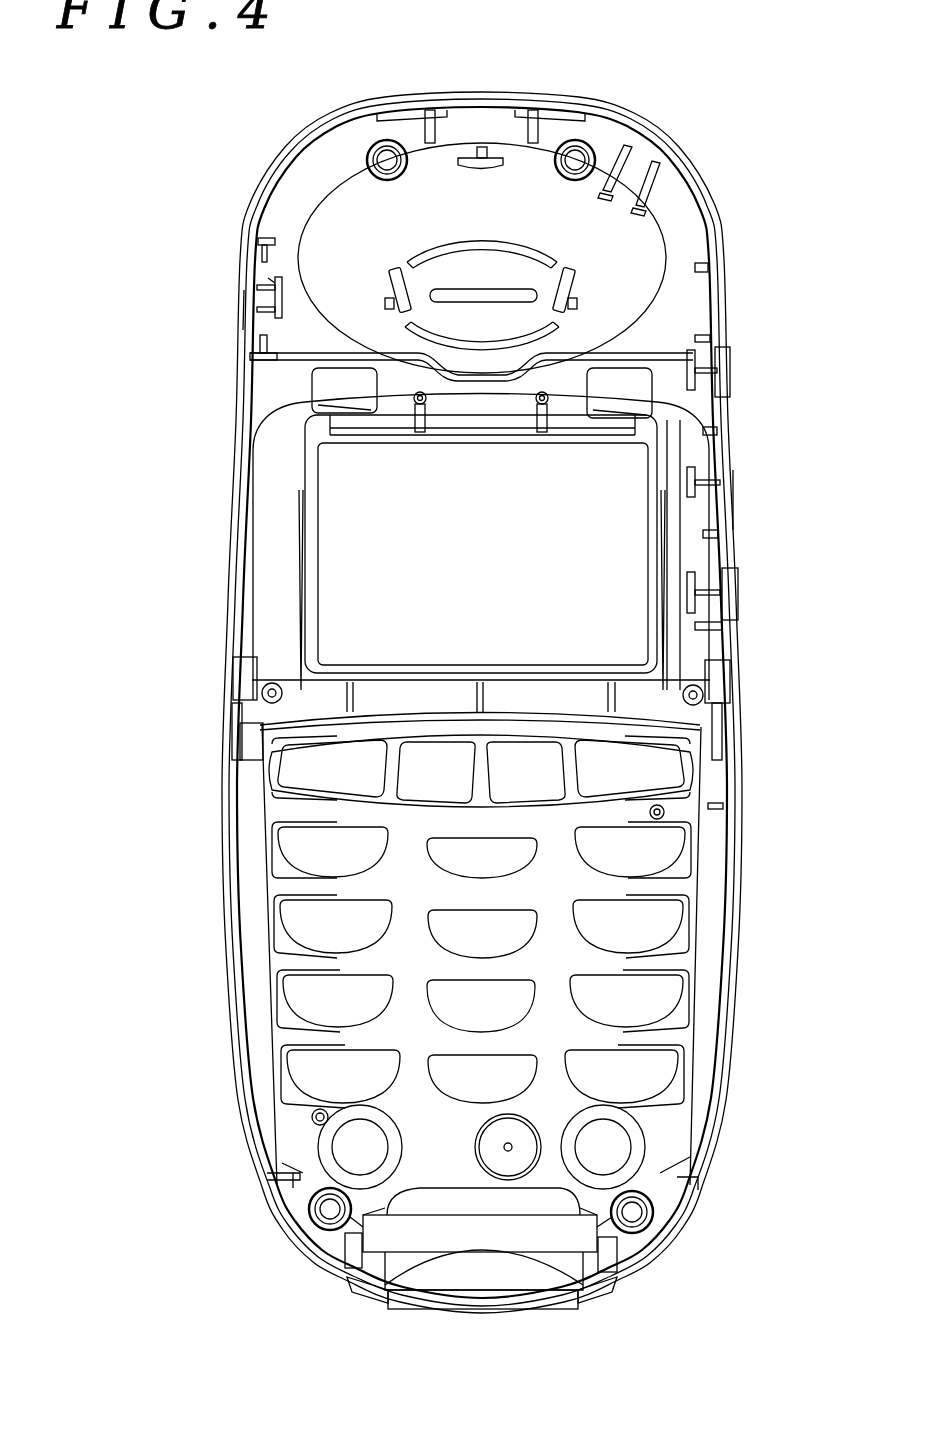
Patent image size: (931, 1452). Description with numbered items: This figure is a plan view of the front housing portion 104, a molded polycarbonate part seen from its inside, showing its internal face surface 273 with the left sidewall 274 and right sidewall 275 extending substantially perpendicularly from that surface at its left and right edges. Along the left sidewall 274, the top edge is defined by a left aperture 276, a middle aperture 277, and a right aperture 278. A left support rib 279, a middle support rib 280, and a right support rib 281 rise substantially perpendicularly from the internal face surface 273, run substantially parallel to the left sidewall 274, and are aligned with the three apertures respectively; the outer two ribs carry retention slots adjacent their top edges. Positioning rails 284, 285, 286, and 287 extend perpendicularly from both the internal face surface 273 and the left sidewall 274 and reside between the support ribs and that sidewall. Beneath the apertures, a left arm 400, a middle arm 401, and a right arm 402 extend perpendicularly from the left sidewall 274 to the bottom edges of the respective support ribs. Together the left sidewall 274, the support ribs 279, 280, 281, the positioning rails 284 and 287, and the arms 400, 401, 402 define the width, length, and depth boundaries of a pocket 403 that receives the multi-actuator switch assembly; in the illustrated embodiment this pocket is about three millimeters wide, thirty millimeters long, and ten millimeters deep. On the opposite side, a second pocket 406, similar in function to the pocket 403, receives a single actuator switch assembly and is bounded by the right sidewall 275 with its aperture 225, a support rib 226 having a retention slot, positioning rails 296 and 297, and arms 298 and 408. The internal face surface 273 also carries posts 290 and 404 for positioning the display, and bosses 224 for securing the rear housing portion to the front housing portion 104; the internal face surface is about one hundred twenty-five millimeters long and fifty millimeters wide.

The front housing portion 104 is at (708, 1217).
The bosses 224 is at (384, 141).
The aperture 225 is at (244, 306).
The support rib 226 is at (284, 292).
The internal face surface 273 is at (567, 1046).
The left sidewall 274 is at (742, 790).
The right sidewall 275 is at (224, 796).
The left aperture 276 is at (730, 581).
The middle aperture 277 is at (734, 498).
The right aperture 278 is at (723, 375).
The left support rib 279 is at (687, 593).
The middle support rib 280 is at (687, 483).
The right support rib 281 is at (696, 360).
The positioning rail 284 is at (712, 628).
The positioning rail 285 is at (703, 534).
The positioning rail 286 is at (712, 431).
The positioning rail 287 is at (700, 337).
The post 290 is at (262, 690).
The positioning rail 296 is at (260, 241).
The positioning rail 297 is at (257, 357).
The arm 298 is at (259, 312).
The left arm 400 is at (717, 594).
The middle arm 401 is at (714, 482).
The right arm 402 is at (708, 370).
The pocket 403 is at (697, 403).
The post 404 is at (703, 703).
The pocket 406 is at (268, 280).
The arm 408 is at (258, 288).